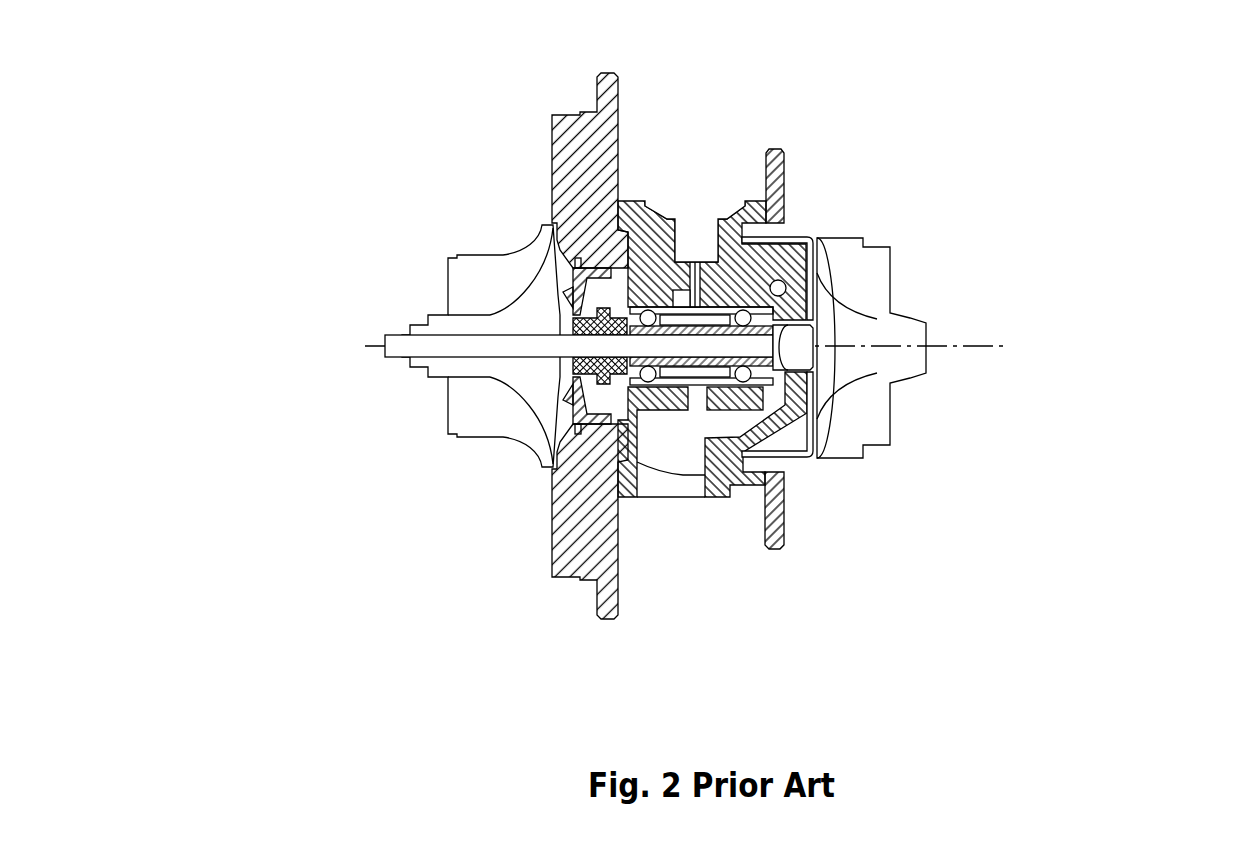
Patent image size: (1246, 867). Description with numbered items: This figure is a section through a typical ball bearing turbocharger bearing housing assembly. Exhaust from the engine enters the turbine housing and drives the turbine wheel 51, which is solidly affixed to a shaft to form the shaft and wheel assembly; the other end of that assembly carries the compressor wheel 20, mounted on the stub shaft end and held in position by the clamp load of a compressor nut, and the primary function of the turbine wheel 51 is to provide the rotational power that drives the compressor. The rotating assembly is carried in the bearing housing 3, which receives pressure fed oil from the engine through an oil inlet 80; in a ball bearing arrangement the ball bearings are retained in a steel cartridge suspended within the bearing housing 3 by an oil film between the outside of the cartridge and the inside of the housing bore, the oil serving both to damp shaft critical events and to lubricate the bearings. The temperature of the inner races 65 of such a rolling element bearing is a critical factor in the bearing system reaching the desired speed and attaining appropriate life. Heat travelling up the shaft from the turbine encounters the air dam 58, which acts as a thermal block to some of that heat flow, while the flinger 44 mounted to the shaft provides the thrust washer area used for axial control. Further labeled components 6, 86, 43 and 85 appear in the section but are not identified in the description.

The turbine housing 6 is at (595, 165).
The oil inlet 80 is at (703, 240).
The bearing housing 3 is at (618, 231).
The oil passage pin 86 is at (705, 262).
The turbine wheel 51 is at (852, 313).
The air dam 58 is at (822, 347).
The inner race 65 is at (820, 349).
The compressor wheel 20 is at (533, 380).
The flinger 44 is at (572, 375).
The seal 43 is at (615, 384).
The oil drain 85 is at (675, 488).